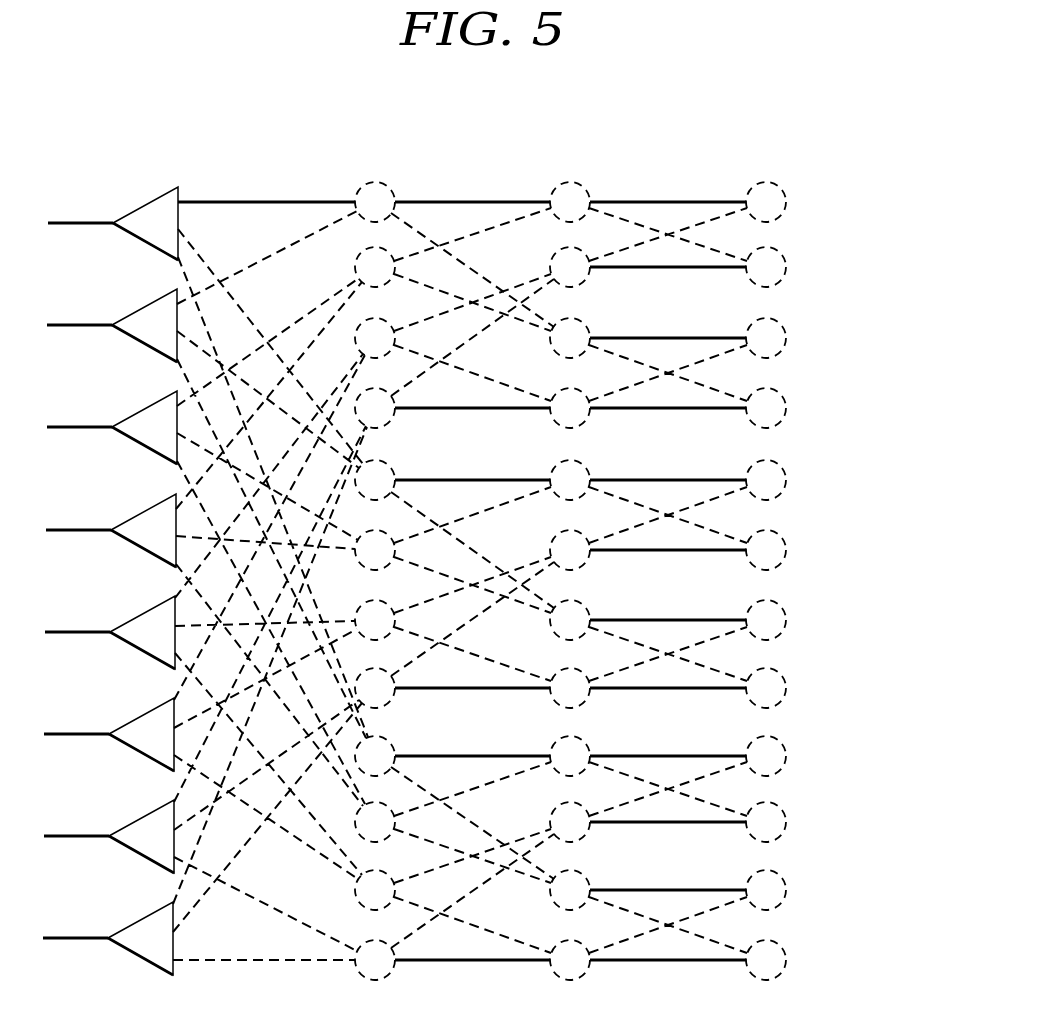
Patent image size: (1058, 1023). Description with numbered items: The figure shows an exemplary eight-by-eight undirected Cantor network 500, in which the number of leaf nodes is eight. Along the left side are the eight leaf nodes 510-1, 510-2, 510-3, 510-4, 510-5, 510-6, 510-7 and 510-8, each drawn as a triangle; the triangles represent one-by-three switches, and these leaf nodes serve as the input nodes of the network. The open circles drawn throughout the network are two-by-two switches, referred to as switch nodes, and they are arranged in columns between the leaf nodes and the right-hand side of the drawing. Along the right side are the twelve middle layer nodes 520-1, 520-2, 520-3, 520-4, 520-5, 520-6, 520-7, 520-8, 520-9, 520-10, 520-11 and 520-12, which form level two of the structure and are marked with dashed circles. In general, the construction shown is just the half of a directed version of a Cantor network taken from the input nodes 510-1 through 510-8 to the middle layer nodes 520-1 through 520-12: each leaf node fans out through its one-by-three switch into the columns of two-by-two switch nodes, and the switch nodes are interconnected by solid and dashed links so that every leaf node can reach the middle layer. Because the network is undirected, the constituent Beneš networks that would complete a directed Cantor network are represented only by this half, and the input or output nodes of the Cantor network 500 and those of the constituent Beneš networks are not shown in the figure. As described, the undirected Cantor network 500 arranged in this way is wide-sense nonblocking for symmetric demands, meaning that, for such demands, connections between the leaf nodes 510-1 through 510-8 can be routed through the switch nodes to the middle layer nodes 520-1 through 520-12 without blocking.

The undirected Cantor network 500 is at (693, 118).
The leaf node 510-1 is at (145, 203).
The leaf node 510-2 is at (144, 305).
The leaf node 510-3 is at (144, 407).
The leaf node 510-4 is at (143, 510).
The leaf node 510-5 is at (142, 612).
The leaf node 510-6 is at (141, 714).
The leaf node 510-7 is at (141, 816).
The leaf node 510-8 is at (140, 918).
The middle layer node 520-1 is at (785, 202).
The middle layer node 520-2 is at (785, 267).
The middle layer node 520-3 is at (785, 338).
The middle layer node 520-4 is at (785, 408).
The middle layer node 520-5 is at (785, 480).
The middle layer node 520-6 is at (785, 550).
The middle layer node 520-7 is at (785, 620).
The middle layer node 520-8 is at (785, 688).
The middle layer node 520-9 is at (785, 756).
The middle layer node 520-10 is at (785, 822).
The middle layer node 520-11 is at (785, 890).
The middle layer node 520-12 is at (785, 960).